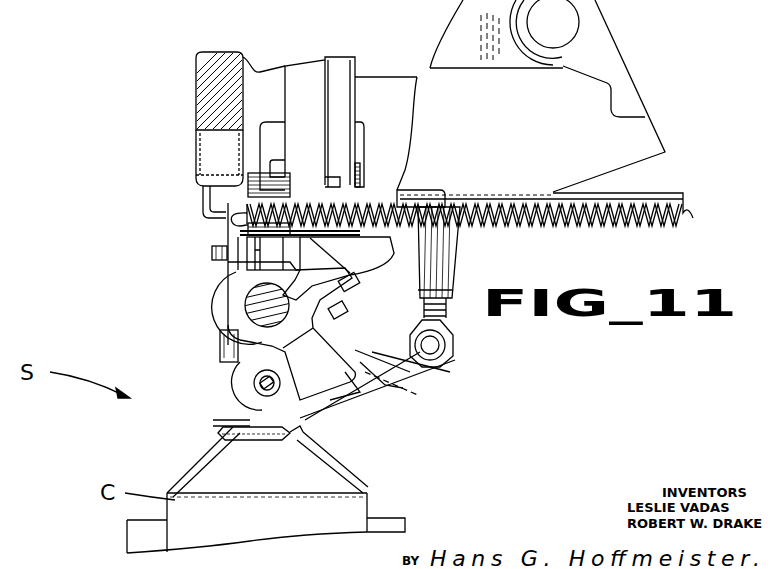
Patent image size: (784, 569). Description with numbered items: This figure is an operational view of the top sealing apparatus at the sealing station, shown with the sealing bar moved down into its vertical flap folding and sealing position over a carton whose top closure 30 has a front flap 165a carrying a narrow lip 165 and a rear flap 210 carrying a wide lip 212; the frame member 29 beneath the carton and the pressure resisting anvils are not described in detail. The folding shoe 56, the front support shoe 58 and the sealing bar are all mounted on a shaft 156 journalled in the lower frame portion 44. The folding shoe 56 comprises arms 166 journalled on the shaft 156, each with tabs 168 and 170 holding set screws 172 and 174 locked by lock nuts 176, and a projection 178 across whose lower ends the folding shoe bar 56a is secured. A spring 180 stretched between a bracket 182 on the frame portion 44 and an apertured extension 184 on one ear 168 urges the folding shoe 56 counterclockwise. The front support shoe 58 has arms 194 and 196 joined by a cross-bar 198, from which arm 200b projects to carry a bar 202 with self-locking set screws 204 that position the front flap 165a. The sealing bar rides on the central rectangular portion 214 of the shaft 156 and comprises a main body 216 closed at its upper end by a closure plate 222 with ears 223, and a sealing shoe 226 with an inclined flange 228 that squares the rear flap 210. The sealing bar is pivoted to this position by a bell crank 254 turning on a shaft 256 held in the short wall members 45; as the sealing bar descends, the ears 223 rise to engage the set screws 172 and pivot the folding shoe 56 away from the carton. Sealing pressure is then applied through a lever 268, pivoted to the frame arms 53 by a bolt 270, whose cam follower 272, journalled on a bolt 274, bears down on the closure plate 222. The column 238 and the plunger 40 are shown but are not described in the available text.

The frame member 29 is at (126, 0).
The top closure 30 is at (200, 458).
The plunger 40 is at (196, 90).
The lower frame portion 44 is at (564, 118).
The short wall members 45 is at (582, 46).
The pair of arms 53 is at (227, 214).
The folding shoe 56 is at (425, 336).
The folding shoe bar 56a is at (335, 417).
The front support shoe 58 is at (463, 357).
The shaft 156 is at (248, 305).
The narrow lip 165 is at (254, 449).
The front flap 165a is at (367, 493).
The arms 166 is at (237, 287).
The tab 168 is at (233, 267).
The tab 170 is at (350, 290).
The set screw 172 is at (213, 256).
The set screw 174 is at (347, 305).
The lock nuts 176 is at (243, 238).
The projection 178 is at (318, 367).
The spring 180 is at (623, 225).
The bracket 182 is at (618, 196).
The apertured extension 184 is at (233, 223).
The arm 194 is at (420, 370).
The arm 196 is at (405, 387).
The cross-bar 198 is at (393, 402).
The arm 200b is at (387, 410).
The bar 202 is at (310, 445).
The self-locking set screws 204 is at (338, 463).
The rear flap 210 is at (213, 448).
The wide lip 212 is at (250, 410).
The central rectangular portion 214 is at (213, 333).
The main body 216 is at (232, 362).
The closure plate 222 is at (283, 251).
The ears 223 is at (284, 204).
The sealing shoe 226 is at (248, 413).
The inclined flange 228 is at (230, 427).
The column 238 is at (465, 255).
The bell crank 254 is at (477, 60).
The shaft 256 is at (563, 23).
The lever 268 is at (308, 70).
The bolt 270 is at (203, 198).
The cam follower 272 is at (197, 175).
The bolt 274 is at (352, 192).